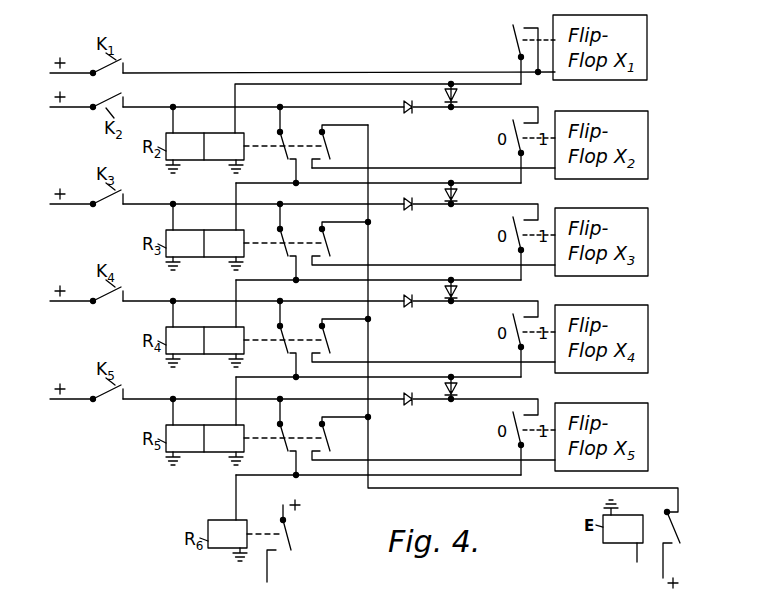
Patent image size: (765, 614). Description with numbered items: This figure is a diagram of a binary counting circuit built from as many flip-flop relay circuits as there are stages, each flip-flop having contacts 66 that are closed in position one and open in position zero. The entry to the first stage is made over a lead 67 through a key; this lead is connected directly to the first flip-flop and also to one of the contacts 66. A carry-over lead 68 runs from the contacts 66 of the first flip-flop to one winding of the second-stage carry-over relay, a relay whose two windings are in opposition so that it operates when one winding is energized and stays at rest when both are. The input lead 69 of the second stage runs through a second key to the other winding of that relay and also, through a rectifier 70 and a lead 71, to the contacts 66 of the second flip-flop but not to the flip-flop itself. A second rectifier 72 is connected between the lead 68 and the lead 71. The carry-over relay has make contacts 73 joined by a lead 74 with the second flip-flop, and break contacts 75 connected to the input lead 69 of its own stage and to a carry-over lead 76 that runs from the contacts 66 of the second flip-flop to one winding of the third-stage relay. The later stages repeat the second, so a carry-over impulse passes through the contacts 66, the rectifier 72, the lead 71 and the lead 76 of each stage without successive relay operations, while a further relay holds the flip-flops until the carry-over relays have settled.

The contacts 66 is at (514, 25).
The lead 67 is at (197, 72).
The carry-over lead 68 is at (267, 84).
The input lead 69 is at (147, 107).
The rectifier 70 is at (410, 114).
The lead 71 is at (478, 108).
The second rectifier 72 is at (458, 90).
The make contacts 73 is at (330, 152).
The lead 74 is at (383, 168).
The break contacts 75 is at (285, 155).
The carry-over lead 76 is at (523, 182).